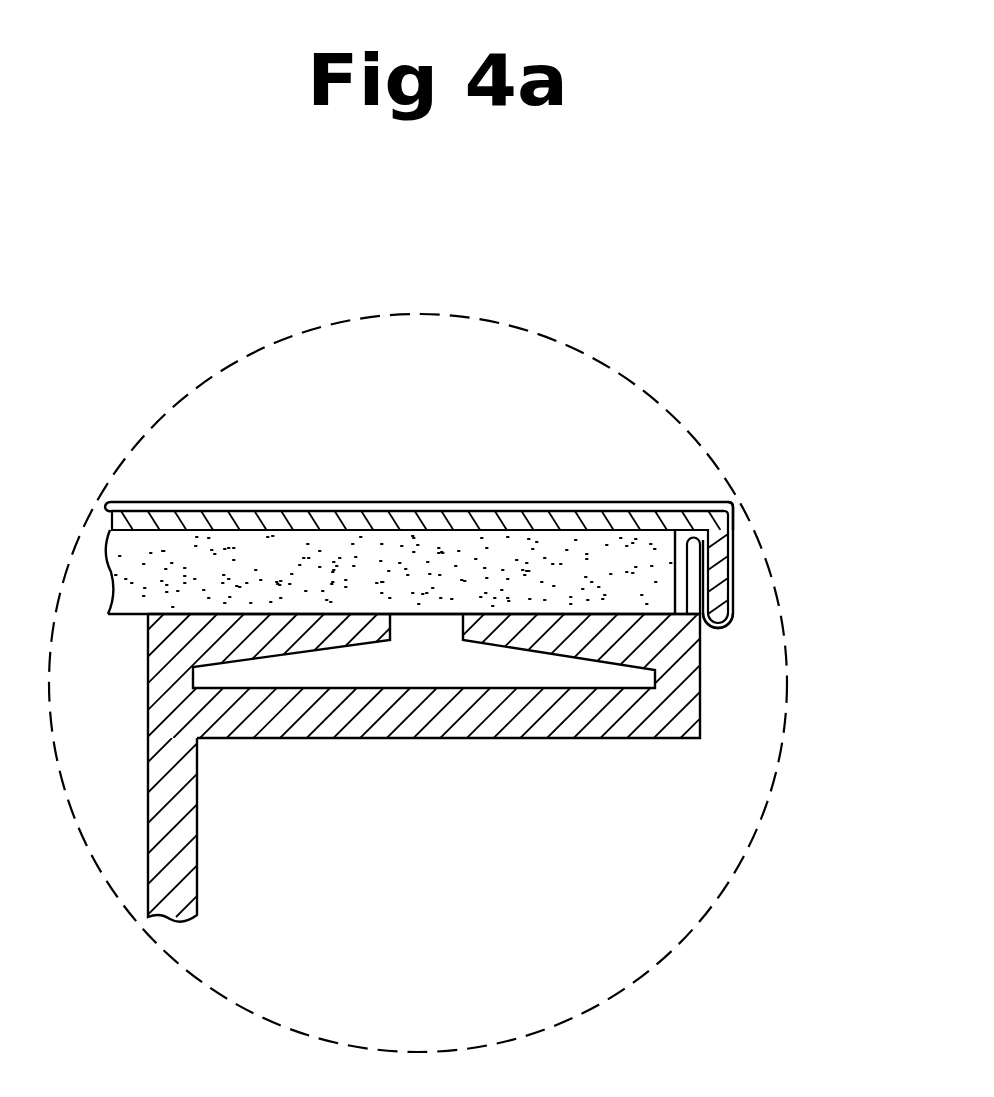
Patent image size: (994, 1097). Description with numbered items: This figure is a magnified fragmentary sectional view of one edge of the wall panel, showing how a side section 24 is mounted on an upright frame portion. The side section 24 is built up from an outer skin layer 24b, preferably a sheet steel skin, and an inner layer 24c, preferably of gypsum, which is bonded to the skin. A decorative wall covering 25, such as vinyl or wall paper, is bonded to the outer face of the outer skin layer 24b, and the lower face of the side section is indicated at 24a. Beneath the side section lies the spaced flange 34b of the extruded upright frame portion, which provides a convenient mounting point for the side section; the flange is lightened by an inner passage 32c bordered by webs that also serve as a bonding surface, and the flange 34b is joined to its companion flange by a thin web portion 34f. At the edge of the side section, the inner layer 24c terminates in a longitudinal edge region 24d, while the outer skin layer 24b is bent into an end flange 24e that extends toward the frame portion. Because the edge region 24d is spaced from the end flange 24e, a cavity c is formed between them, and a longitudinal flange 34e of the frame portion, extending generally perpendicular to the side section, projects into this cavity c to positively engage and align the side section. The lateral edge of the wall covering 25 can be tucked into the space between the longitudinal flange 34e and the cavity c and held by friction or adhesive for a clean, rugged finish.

The side section 24 is at (414, 412).
The bottom surface of cover 24a is at (127, 616).
The outer skin layer 24b is at (272, 523).
The inner layer 24c is at (213, 578).
The longitudinal edge region 24d is at (676, 560).
The end flange 24e is at (715, 560).
The wall covering 25 is at (357, 512).
The cavity c is at (687, 532).
The inner passage 32c is at (432, 662).
The spaced flange 34b is at (648, 718).
The longitudinal flange 34e is at (700, 628).
The web portion 34f is at (172, 838).